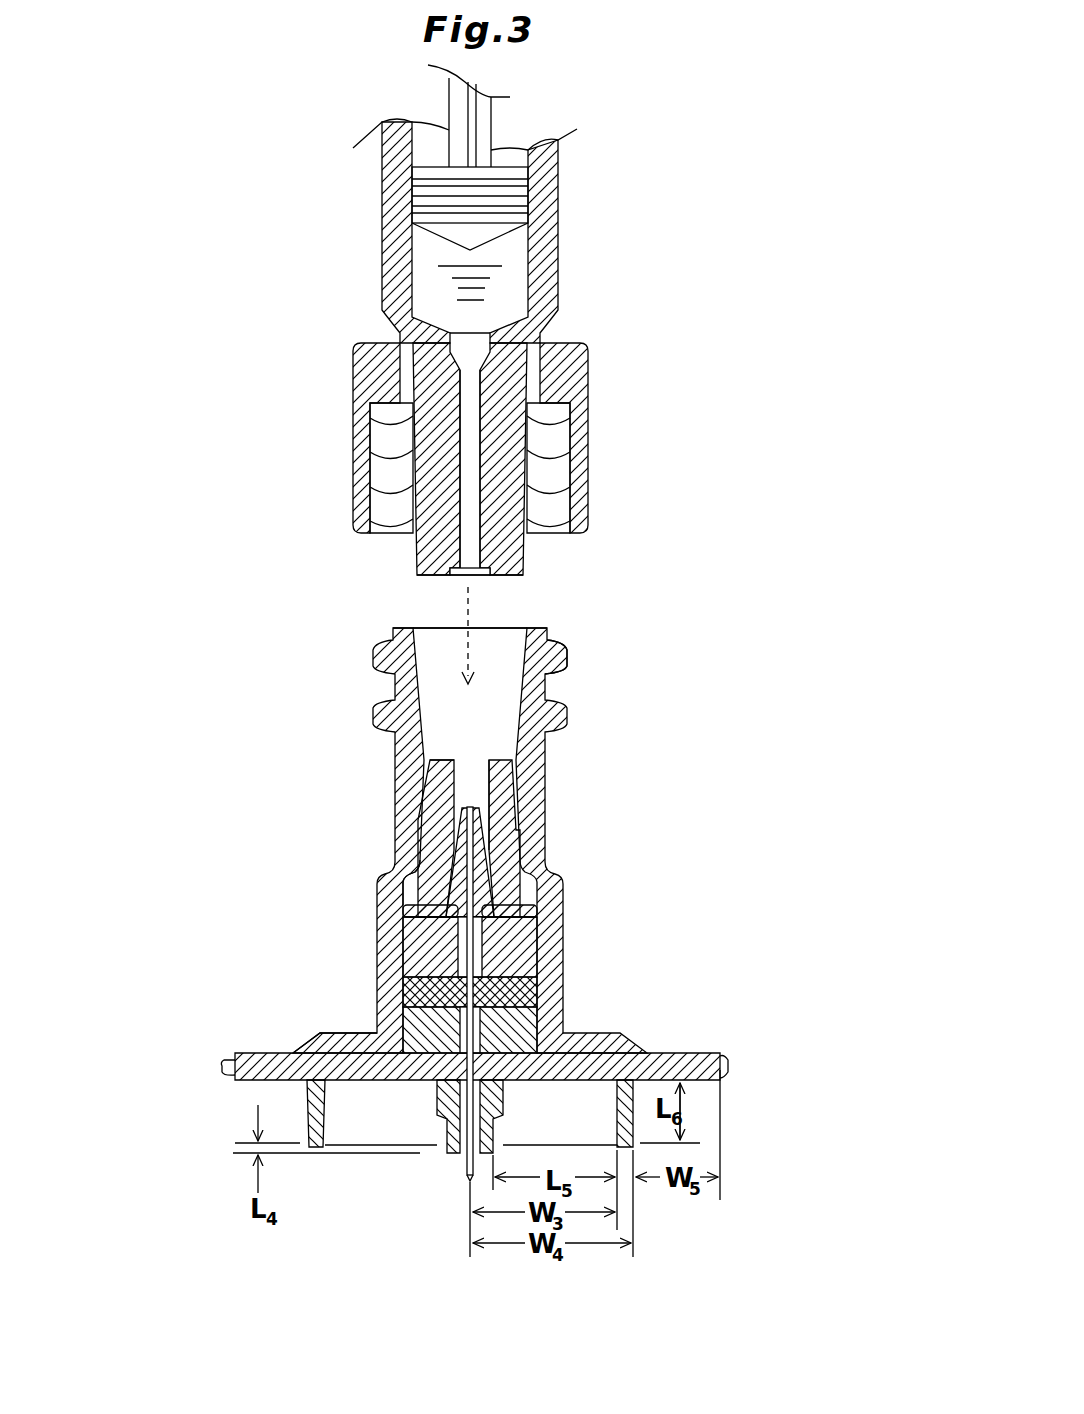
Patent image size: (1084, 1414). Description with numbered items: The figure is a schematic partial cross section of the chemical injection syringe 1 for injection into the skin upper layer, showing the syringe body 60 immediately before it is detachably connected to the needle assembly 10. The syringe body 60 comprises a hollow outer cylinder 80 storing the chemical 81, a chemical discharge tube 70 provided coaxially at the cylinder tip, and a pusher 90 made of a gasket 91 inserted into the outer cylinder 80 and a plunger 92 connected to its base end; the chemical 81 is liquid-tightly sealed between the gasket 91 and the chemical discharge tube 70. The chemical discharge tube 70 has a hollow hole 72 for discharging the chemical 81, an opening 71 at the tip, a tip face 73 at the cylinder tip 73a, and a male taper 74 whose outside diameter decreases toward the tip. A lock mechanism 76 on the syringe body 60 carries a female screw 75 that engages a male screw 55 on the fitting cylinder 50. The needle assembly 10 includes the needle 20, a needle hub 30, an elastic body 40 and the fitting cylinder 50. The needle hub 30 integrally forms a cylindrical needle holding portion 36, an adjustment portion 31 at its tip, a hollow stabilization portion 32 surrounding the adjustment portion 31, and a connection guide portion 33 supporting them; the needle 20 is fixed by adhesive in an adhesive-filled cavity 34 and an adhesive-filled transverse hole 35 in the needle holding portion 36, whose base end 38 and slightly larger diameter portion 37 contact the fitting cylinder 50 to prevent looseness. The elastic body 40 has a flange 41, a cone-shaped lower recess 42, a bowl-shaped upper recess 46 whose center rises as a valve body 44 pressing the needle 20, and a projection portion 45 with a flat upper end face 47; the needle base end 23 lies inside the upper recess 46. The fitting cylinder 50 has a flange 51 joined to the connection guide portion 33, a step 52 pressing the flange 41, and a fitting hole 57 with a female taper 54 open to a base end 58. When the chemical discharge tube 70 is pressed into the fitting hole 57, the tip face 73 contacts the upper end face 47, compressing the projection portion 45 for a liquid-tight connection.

The chemical injection syringe 1 is at (698, 118).
The needle assembly 10 is at (198, 715).
The needle 20 is at (452, 1165).
The needle base end 23 is at (483, 772).
The needle hub 30 is at (423, 950).
The adjustment portion 31 is at (491, 1132).
The stabilization portion 32 is at (322, 1118).
The connection guide portion 33 is at (245, 1068).
The adhesive-filled cavity 34 is at (478, 1045).
The adhesive-filled transverse hole 35 is at (520, 990).
The needle holding portion 36 is at (515, 960).
The slightly larger diameter portion 37 is at (410, 925).
The base end 38 is at (430, 910).
The elastic body 40 is at (433, 842).
The flange 41 is at (522, 912).
The lower recess 42 is at (478, 877).
The valve body 44 is at (462, 824).
The projection portion 45 is at (437, 780).
The upper recess 46 is at (472, 804).
The upper end face 47 is at (440, 760).
The fitting cylinder 50 is at (388, 741).
The flange 51 is at (350, 1040).
The step 52 is at (455, 910).
The female taper 54 is at (545, 782).
The male screw 55 is at (560, 660).
The fitting hole 57 is at (497, 645).
The base end 58 is at (547, 630).
The syringe body 60 is at (258, 65).
The chemical discharge tube 70 is at (408, 463).
The opening 71 is at (447, 577).
The hollow hole 72 is at (470, 562).
The tip face 73 is at (507, 577).
The cylinder tip 73a is at (500, 574).
The male taper 74 is at (530, 553).
The female screw 75 is at (545, 457).
The lock mechanism 76 is at (580, 348).
The outer cylinder 80 is at (380, 213).
The chemical 81 is at (505, 290).
The pusher 90 is at (446, 95).
The gasket 91 is at (512, 197).
The plunger 92 is at (488, 118).